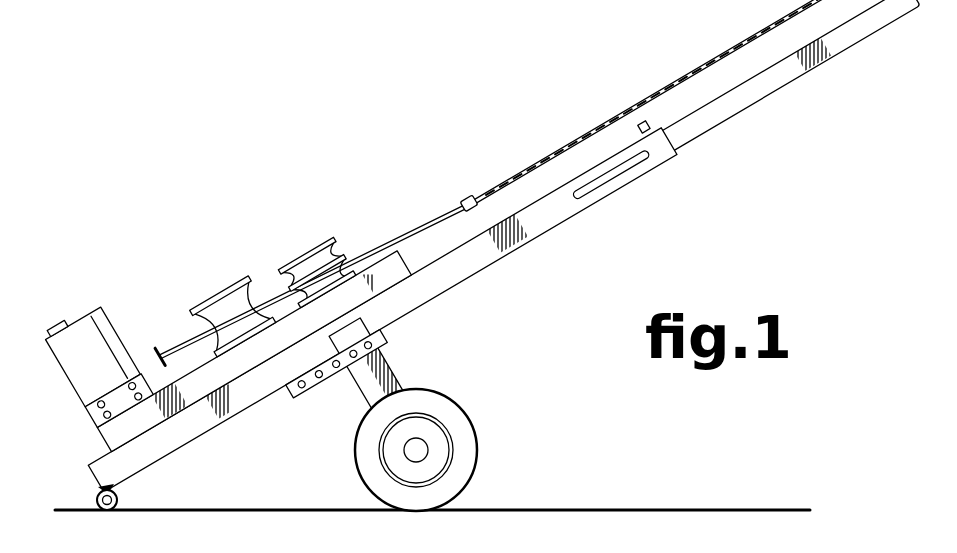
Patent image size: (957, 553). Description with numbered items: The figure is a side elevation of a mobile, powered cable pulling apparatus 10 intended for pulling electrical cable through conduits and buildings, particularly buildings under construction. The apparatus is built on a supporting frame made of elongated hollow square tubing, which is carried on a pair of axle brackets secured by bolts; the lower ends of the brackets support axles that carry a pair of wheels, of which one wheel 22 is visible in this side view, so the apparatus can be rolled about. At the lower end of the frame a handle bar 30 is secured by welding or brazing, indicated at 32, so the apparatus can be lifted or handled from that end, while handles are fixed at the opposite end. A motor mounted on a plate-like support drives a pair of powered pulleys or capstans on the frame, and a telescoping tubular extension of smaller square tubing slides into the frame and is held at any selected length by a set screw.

The cable pulling apparatus 10 is at (395, 168).
The wheel 22 is at (366, 466).
The handle bar 30 is at (118, 500).
The welding or brazing 32 is at (92, 495).